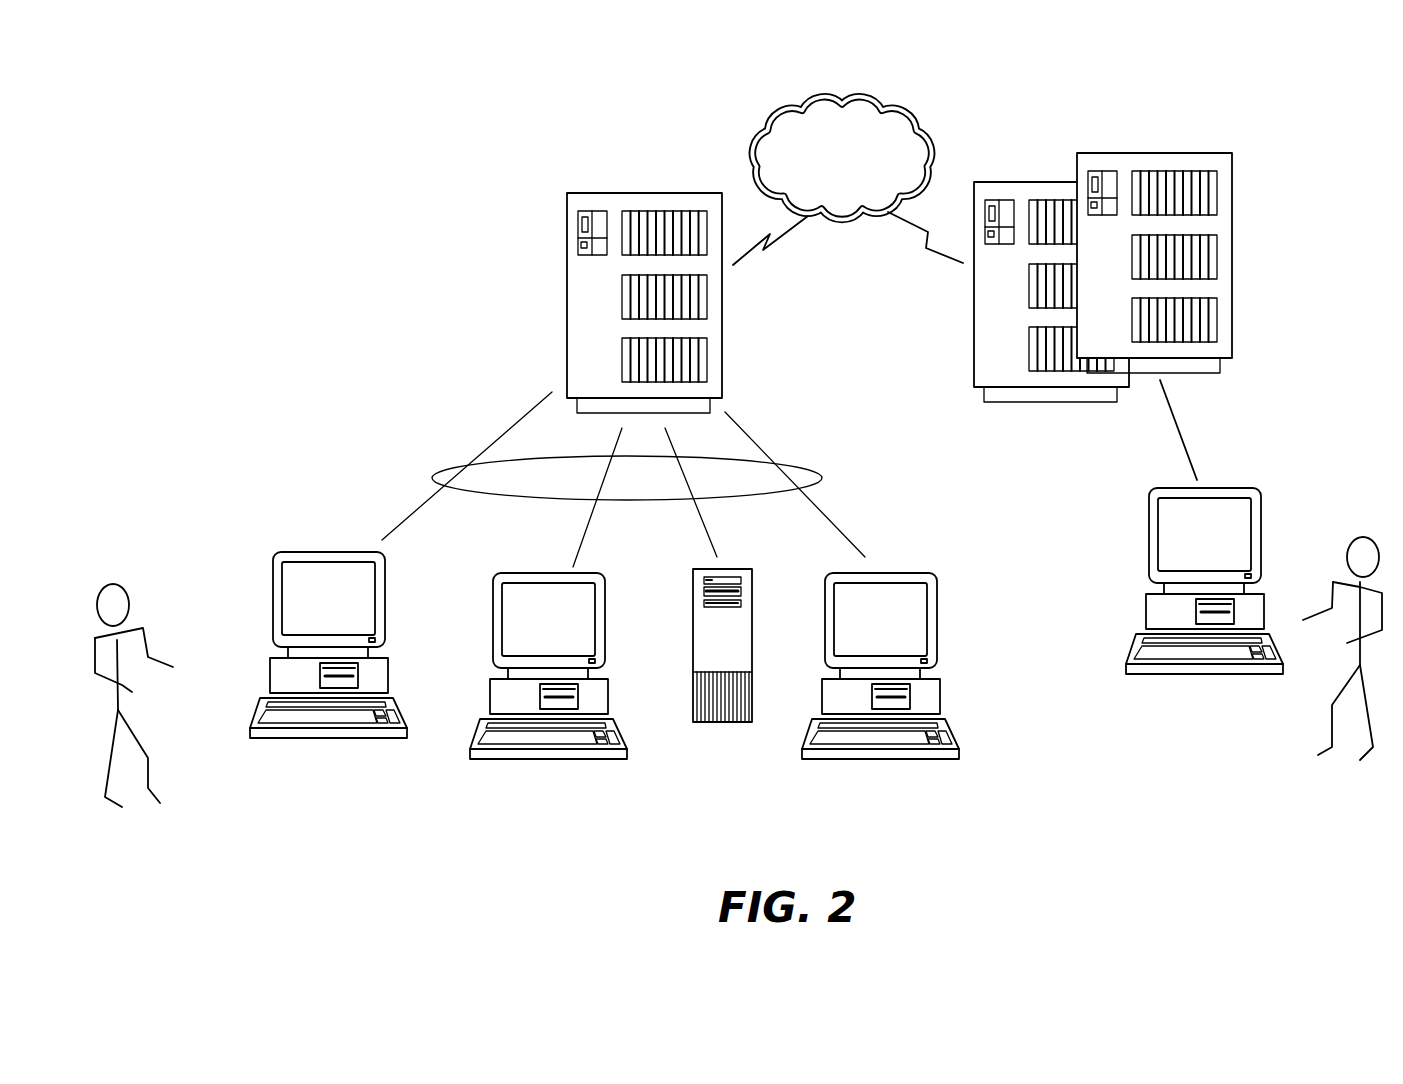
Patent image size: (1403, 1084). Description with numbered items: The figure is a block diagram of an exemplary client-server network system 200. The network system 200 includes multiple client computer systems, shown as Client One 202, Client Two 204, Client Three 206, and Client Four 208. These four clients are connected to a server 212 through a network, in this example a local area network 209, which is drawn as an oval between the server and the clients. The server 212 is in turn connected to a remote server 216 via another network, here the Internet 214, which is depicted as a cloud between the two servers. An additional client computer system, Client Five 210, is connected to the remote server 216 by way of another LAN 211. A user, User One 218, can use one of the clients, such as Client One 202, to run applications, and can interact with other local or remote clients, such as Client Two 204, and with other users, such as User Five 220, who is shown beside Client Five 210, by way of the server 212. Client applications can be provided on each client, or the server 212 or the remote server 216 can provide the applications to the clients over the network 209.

The network system 200 is at (738, 488).
The Client 1 202 is at (332, 545).
The Client 2 204 is at (543, 567).
The Client 3 206 is at (728, 567).
The Client 4 208 is at (903, 572).
The local area network (LAN) 209 is at (793, 463).
The Client 5 210 is at (1172, 488).
The LAN 211 is at (1182, 443).
The server 212 is at (567, 302).
The Internet 214 is at (915, 117).
The remote server 216 is at (1232, 248).
The User 1 218 is at (122, 570).
The User 5 220 is at (1365, 528).